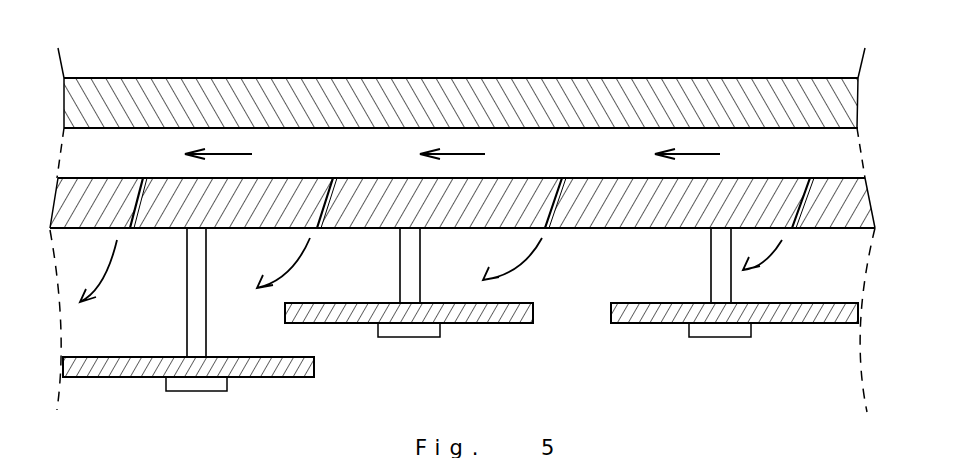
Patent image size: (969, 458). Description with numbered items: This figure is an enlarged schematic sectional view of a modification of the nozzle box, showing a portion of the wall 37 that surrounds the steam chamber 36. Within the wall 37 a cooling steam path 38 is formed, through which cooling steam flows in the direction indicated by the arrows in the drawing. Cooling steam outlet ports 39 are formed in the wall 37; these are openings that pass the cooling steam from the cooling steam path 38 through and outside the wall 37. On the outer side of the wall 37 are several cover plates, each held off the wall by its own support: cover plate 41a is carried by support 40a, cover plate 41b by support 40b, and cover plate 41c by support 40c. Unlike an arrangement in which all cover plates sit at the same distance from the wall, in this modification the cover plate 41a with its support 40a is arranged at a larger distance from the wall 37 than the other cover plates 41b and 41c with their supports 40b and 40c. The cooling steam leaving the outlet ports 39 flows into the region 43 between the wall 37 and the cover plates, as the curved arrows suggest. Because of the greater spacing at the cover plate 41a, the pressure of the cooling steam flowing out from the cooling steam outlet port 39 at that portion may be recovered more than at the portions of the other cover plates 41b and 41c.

The steam chamber 36 is at (473, 62).
The wall 37 is at (462, 121).
The cooling steam path 38 is at (322, 153).
The cooling steam outlet port 39 is at (562, 193).
The support 40a is at (196, 393).
The support 40b is at (408, 338).
The support 40c is at (729, 338).
The cover plate 41a is at (280, 378).
The cover plate 41b is at (492, 325).
The cover plate 41c is at (813, 325).
The space below member 43 is at (148, 329).